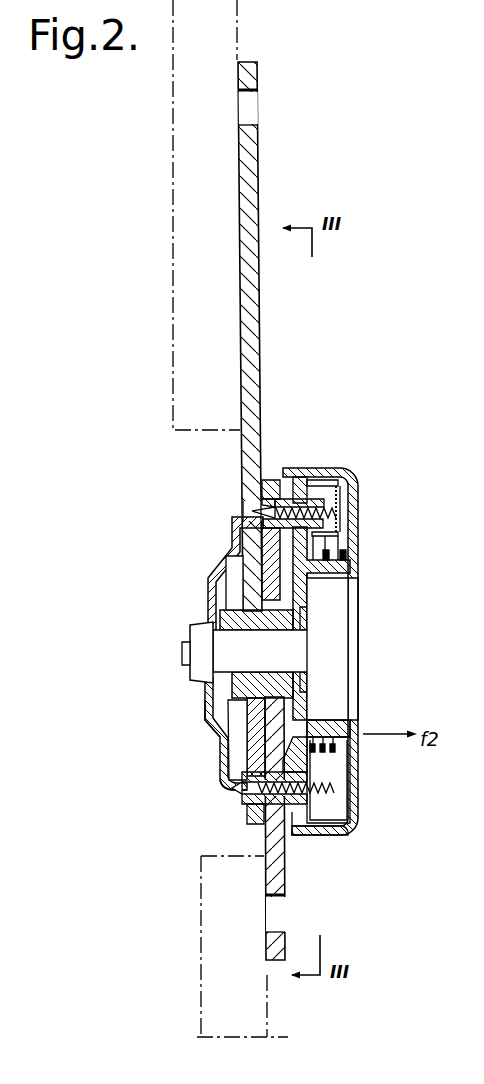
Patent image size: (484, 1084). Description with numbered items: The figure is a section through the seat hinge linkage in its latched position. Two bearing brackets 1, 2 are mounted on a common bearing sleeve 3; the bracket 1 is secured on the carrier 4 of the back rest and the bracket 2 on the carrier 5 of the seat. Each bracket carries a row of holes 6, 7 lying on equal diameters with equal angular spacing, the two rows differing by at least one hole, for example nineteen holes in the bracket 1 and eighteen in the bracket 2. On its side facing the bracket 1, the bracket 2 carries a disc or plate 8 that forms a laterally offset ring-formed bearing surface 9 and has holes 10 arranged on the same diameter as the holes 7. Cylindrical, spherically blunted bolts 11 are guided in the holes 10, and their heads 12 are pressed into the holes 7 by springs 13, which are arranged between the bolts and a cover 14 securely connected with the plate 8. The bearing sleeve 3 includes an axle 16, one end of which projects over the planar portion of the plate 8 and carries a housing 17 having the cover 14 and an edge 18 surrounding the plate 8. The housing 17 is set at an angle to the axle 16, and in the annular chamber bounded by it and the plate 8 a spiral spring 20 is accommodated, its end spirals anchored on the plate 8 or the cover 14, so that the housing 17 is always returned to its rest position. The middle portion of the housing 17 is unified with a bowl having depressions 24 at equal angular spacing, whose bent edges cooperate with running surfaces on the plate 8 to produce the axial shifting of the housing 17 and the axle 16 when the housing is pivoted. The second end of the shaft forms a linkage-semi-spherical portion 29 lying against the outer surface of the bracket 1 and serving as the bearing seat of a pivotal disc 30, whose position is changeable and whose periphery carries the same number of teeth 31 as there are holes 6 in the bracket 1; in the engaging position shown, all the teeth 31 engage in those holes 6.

The bearing bracket 1 is at (258, 152).
The bearing bracket 2 is at (278, 960).
The bearing sleeve 3 is at (232, 598).
The carrier of the back rest 4 is at (173, 150).
The carrier of the seat 5 is at (201, 950).
The holes 6 is at (258, 508).
The holes 7 is at (268, 480).
The disc or plate 8 is at (322, 787).
The ring-formed bearing surface 9 is at (297, 838).
The holes 10 is at (336, 838).
The bolts 11 is at (328, 482).
The heads 12 is at (262, 505).
The springs 13 is at (345, 512).
The cover 14 is at (345, 468).
The axis or axle 16 is at (300, 641).
The housing 17 is at (357, 566).
The edge 18 is at (293, 468).
The spiral spring 20 is at (336, 750).
The depressions 24 is at (322, 692).
The linkage-semi-spherical portion 29 is at (190, 668).
The pivotal disc 30 is at (206, 728).
The teeth 31 is at (220, 786).